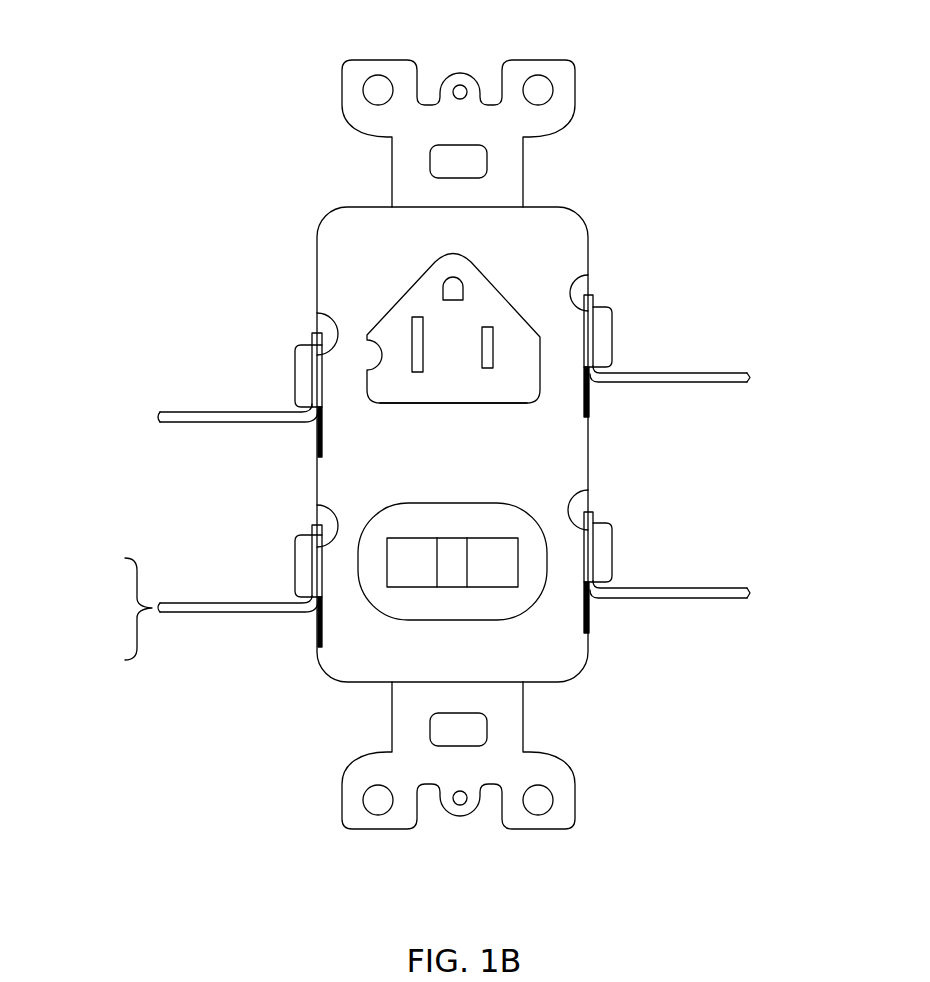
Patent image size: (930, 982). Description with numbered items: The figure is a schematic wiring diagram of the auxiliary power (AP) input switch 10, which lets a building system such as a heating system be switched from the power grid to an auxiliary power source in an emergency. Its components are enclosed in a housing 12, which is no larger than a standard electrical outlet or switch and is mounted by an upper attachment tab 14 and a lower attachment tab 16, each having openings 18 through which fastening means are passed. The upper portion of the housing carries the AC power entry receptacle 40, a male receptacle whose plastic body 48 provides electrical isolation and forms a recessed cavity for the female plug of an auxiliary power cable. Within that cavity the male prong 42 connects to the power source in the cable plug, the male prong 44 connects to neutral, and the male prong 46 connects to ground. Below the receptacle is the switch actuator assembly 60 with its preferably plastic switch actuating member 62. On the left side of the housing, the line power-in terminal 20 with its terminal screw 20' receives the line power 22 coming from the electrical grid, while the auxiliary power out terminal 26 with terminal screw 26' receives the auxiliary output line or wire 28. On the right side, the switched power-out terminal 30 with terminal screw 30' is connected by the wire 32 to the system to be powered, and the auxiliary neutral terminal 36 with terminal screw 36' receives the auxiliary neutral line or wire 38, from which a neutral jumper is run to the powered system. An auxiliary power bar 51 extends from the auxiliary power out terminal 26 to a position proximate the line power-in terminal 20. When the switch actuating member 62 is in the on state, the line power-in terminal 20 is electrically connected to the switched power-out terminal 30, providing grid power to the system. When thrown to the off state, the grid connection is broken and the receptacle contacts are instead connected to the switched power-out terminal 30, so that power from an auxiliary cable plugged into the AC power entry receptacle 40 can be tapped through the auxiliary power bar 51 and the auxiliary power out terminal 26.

The auxiliary power input switch 10 is at (682, 103).
The housing 12 is at (577, 230).
The upper attachment tab 14 is at (567, 92).
The lower attachment tab 16 is at (567, 800).
The openings 18 is at (378, 75).
The line power-in terminal 20 is at (300, 519).
The terminal screw 20' is at (278, 561).
The line power 22 is at (205, 603).
The auxiliary power out terminal 26 is at (301, 327).
The terminal screw 26' is at (278, 370).
The auxiliary output line or wire 28 is at (203, 412).
The switched power-out terminal 30 is at (602, 502).
The terminal screw 30' is at (628, 547).
The line or wire 32 is at (705, 588).
The auxiliary neutral terminal 36 is at (604, 285).
The terminal screw 36' is at (628, 331).
The auxiliary neutral line or wire 38 is at (705, 373).
The AC power entry receptacle 40 is at (500, 305).
The male prong 42 is at (418, 323).
The male prong 44 is at (488, 360).
The male prong 46 is at (453, 286).
The plastic body 48 is at (403, 403).
The auxiliary power bar 51 is at (320, 433).
The switch actuator assembly 60 is at (487, 613).
The switch actuating member 62 is at (415, 587).